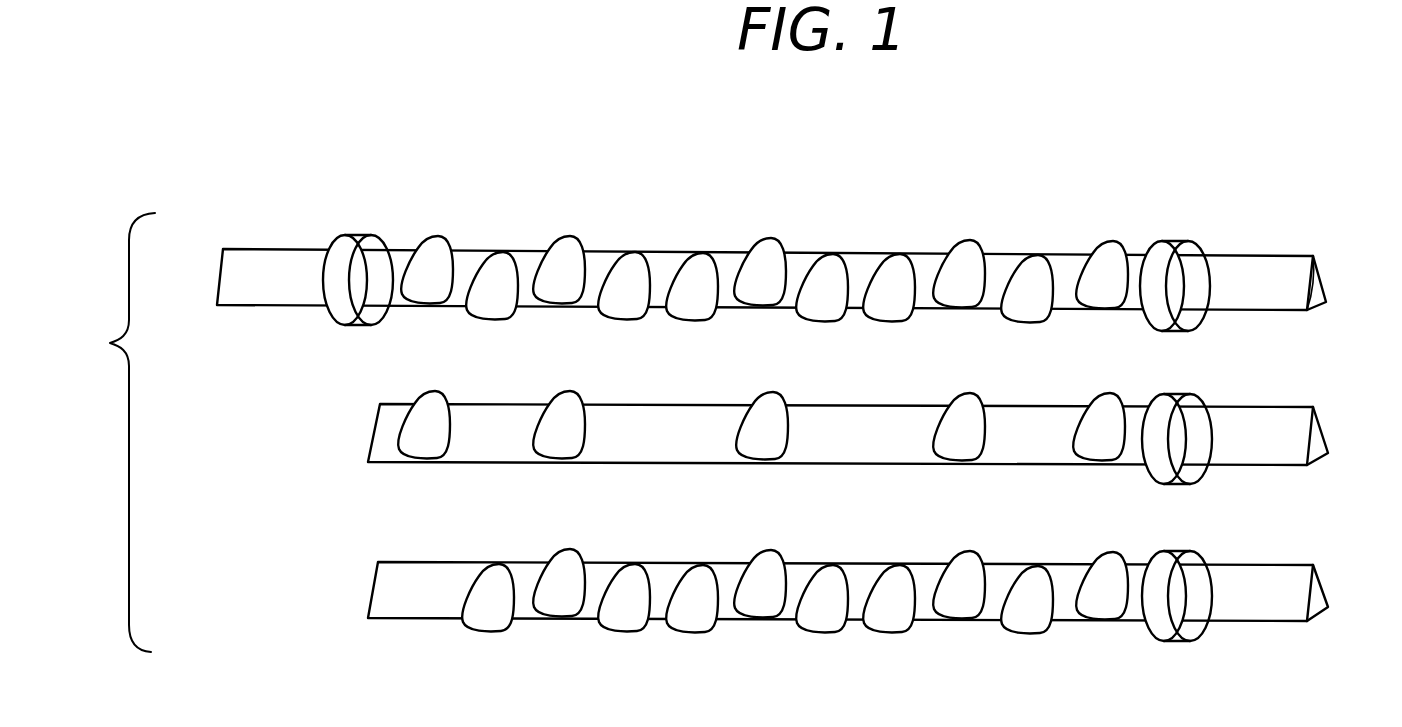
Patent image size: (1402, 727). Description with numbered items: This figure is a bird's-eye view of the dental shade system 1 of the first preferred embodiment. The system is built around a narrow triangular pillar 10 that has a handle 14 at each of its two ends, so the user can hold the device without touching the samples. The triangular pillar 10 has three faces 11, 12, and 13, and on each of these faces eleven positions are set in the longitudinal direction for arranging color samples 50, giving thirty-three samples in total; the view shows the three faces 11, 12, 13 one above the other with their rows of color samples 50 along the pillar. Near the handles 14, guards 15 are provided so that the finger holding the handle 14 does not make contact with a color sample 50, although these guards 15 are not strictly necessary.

The dental shade system 1 is at (850, 160).
The triangular pillar 10 is at (762, 250).
The face 11 is at (237, 275).
The face 12 is at (390, 420).
The face 13 is at (388, 583).
The handle 14 is at (282, 262).
The guard 15 is at (353, 237).
The color sample 50 is at (437, 256).